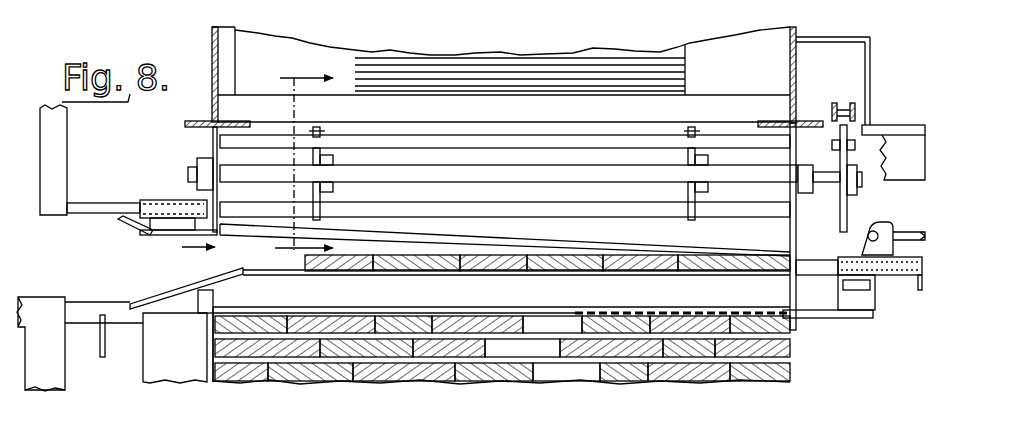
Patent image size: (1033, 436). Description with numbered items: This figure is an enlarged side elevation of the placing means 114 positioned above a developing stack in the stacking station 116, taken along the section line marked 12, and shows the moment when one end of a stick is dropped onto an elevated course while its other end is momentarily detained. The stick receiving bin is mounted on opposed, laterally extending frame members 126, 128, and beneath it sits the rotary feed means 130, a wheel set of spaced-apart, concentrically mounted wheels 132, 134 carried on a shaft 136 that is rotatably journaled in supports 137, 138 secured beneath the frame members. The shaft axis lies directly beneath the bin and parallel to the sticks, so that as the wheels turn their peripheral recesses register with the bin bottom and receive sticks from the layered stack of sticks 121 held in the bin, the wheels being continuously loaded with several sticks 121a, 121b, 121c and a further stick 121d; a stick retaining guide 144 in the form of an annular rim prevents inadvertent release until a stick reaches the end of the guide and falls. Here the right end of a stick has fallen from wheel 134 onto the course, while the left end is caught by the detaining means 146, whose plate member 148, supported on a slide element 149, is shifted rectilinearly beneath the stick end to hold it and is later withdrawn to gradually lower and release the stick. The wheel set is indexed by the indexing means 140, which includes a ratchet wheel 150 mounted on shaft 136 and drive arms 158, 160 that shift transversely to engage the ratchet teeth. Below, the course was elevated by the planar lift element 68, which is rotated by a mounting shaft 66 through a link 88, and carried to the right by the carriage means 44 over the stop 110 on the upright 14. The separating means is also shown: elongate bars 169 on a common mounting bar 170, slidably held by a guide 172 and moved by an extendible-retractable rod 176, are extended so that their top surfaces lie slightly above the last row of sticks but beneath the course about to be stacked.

The section line 12- 12 is at (257, 166).
The upright 14 is at (163, 367).
The carriage means 44 is at (47, 368).
The mounting shaft 66 is at (88, 305).
The lift element 68 is at (242, 283).
The link 88 is at (102, 343).
The stop 110 is at (205, 308).
The placing means 114 is at (505, 88).
The stacking station 116 is at (800, 385).
The strip stack 121 is at (547, 75).
The stick 121a is at (505, 123).
The stick 121b is at (542, 172).
The stick 121c is at (562, 213).
The inclined rod 121d is at (625, 232).
The frame member 126 is at (212, 45).
The frame member 128 is at (790, 57).
The rotary feed means 130 is at (508, 139).
The wheel 132 is at (348, 160).
The wheel 134 is at (697, 160).
The shaft 136 is at (193, 165).
The support 137 is at (211, 137).
The support 138 is at (802, 143).
The indexing means 140 is at (858, 97).
The stick retaining guide 144 is at (316, 118).
The detaining means 146 is at (115, 196).
The plate member 148 is at (160, 240).
The slide element 149 is at (158, 200).
The ratchet wheel 150 is at (850, 207).
The drive arm 158 is at (855, 107).
The drive arm 160 is at (832, 107).
The elongate bar 169 is at (825, 317).
The mounting bar 170 is at (875, 287).
The guide 172 is at (892, 272).
The rod 176 is at (913, 224).